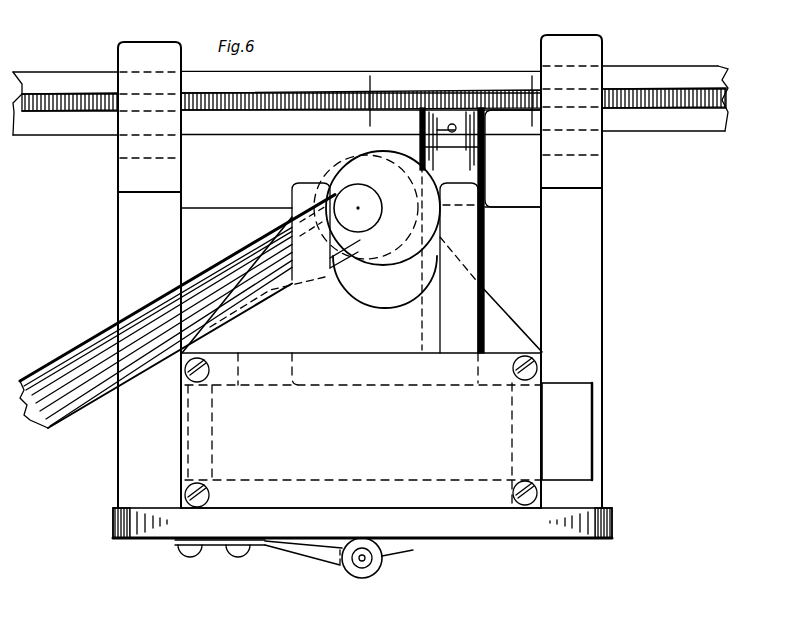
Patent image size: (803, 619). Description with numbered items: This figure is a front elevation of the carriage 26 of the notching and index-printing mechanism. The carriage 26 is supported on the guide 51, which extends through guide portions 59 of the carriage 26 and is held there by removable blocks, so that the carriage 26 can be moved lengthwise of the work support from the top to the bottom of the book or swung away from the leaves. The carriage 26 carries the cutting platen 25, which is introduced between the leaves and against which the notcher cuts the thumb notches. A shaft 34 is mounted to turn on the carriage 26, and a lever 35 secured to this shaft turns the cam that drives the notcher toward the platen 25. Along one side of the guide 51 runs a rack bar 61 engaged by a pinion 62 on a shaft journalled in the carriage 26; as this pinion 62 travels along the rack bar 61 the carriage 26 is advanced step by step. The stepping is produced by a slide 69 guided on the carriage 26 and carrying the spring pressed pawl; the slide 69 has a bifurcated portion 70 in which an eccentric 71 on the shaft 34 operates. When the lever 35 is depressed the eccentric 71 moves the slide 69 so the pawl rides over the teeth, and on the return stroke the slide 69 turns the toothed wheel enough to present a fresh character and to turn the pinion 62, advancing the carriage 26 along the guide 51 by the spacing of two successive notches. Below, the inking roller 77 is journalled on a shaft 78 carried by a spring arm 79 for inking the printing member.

The cutting platen 25 is at (478, 528).
The carriage 26 is at (128, 230).
The shaft 34 is at (347, 192).
The lever 35 is at (85, 345).
The guide 51 is at (75, 78).
The guide portions 59 is at (152, 50).
The rack bar 61 is at (73, 105).
The pinion 62 is at (447, 92).
The slide 69 is at (497, 308).
The bifurcated portion 70 is at (353, 343).
The eccentric 71 is at (392, 255).
The inking roller 77 is at (413, 550).
The shaft 78 is at (362, 565).
The spring arm 79 is at (288, 548).